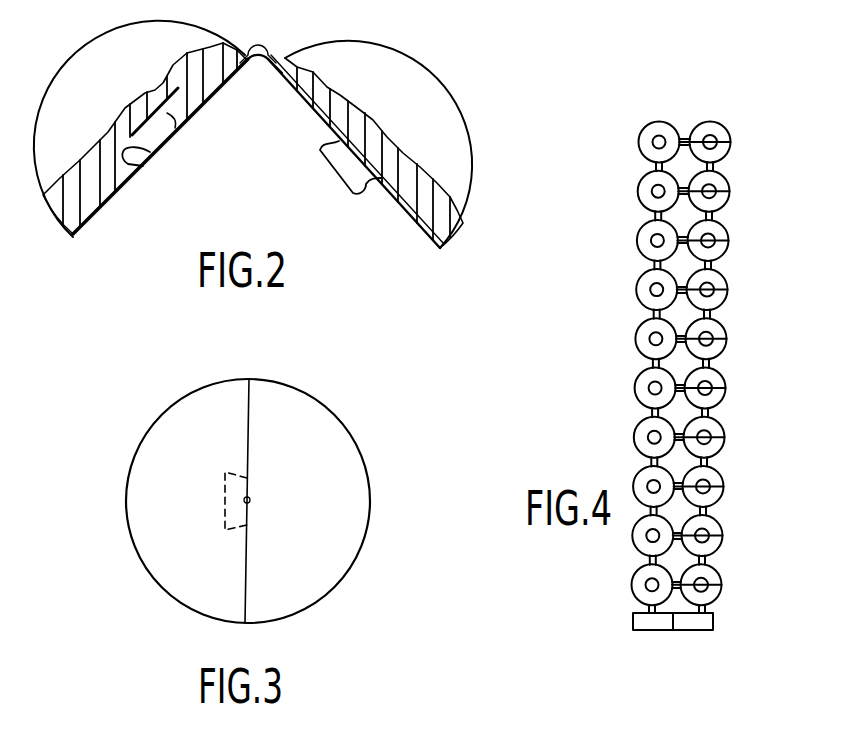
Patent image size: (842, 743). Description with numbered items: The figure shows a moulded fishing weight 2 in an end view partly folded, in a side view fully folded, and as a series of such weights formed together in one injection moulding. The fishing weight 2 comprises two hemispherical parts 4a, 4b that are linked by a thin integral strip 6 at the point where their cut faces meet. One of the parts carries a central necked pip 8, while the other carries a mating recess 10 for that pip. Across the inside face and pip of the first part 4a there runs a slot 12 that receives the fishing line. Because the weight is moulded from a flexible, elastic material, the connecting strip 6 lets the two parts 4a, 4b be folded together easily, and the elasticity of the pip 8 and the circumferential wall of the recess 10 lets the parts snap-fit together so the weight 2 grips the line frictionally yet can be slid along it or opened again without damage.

In FIG. 3, the fishing weight 2 is at (333, 573).
In FIG. 2, the first hemispherical part 4a is at (447, 220).
In FIG. 4, the first hemispherical part 4a is at (698, 445).
In FIG. 2, the second hemispherical part 4b is at (97, 196).
In FIG. 4, the second hemispherical part 4b is at (640, 345).
In FIG. 2, the thin integral strip 6 is at (260, 53).
In FIG. 2, the central necked pip 8 is at (353, 175).
In FIG. 2, the mating recess 10 is at (157, 151).
In FIG. 3, the slot 12 is at (251, 500).